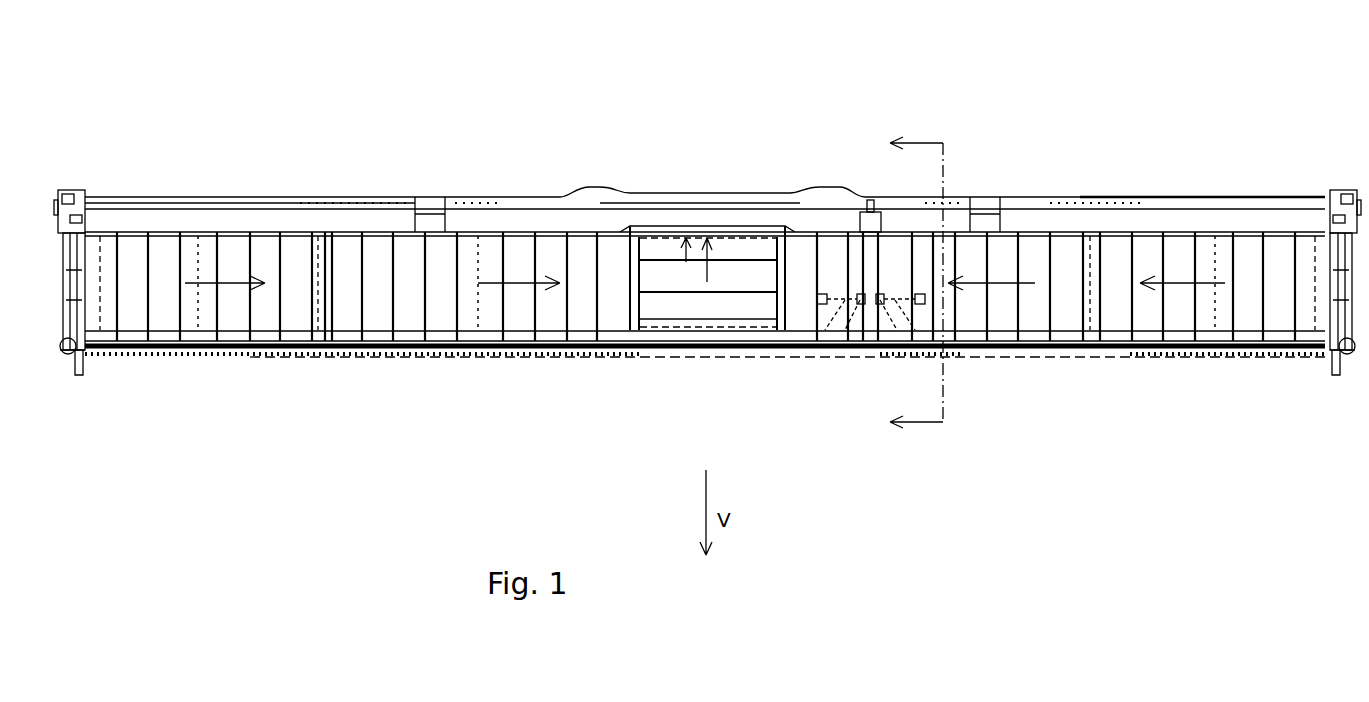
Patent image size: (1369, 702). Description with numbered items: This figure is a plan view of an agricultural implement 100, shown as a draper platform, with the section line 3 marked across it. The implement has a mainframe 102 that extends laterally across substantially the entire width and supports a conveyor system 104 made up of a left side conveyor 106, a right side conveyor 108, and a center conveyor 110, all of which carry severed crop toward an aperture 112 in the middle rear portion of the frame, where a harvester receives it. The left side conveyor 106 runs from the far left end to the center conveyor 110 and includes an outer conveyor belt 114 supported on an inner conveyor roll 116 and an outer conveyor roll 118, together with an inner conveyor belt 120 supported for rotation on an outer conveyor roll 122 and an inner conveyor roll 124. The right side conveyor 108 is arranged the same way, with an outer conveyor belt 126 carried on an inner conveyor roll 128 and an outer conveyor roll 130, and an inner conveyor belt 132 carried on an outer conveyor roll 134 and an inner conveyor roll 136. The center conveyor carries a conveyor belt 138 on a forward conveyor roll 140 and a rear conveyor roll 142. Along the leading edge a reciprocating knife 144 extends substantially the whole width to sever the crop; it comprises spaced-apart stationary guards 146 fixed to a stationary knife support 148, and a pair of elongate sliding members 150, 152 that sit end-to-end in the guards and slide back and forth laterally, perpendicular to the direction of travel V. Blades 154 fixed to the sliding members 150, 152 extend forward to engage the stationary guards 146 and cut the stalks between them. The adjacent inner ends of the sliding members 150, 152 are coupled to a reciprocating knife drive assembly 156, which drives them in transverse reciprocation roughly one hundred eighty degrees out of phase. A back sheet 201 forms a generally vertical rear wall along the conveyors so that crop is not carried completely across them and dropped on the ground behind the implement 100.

The agricultural implement 100 is at (708, 99).
The mainframe 102 is at (738, 205).
The conveyor system 104 is at (525, 300).
The left side conveyor 106 is at (1192, 420).
The right side conveyor 108 is at (210, 405).
The center conveyor 110 is at (772, 452).
The aperture 112 is at (684, 248).
The outer conveyor belt 114 is at (1255, 310).
The inner conveyor roll 116 is at (1108, 265).
The outer conveyor roll 118 is at (1325, 265).
The inner conveyor belt 120 is at (1005, 300).
The outer conveyor roll 122 is at (1065, 300).
The inner conveyor roll 124 is at (805, 300).
The outer conveyor belt 126 is at (163, 275).
The inner conveyor roll 128 is at (305, 305).
The outer conveyor roll 130 is at (96, 262).
The inner conveyor belt 132 is at (447, 310).
The outer conveyor roll 134 is at (338, 290).
The inner conveyor roll 136 is at (605, 300).
The conveyor belt 138 is at (680, 300).
The forward conveyor roll 140 is at (725, 315).
The rear conveyor roll 142 is at (745, 245).
The reciprocating knife 144 is at (84, 355).
The stationary guards 146 is at (235, 352).
The stationary knife support 148 is at (178, 352).
The elongate sliding member 150 is at (1148, 355).
The elongate sliding member 152 is at (547, 355).
The blades 154 is at (125, 355).
The reciprocating knife drive assembly 156 is at (885, 295).
The back sheet 201 is at (215, 225).
The section line 3- 3 is at (906, 277).